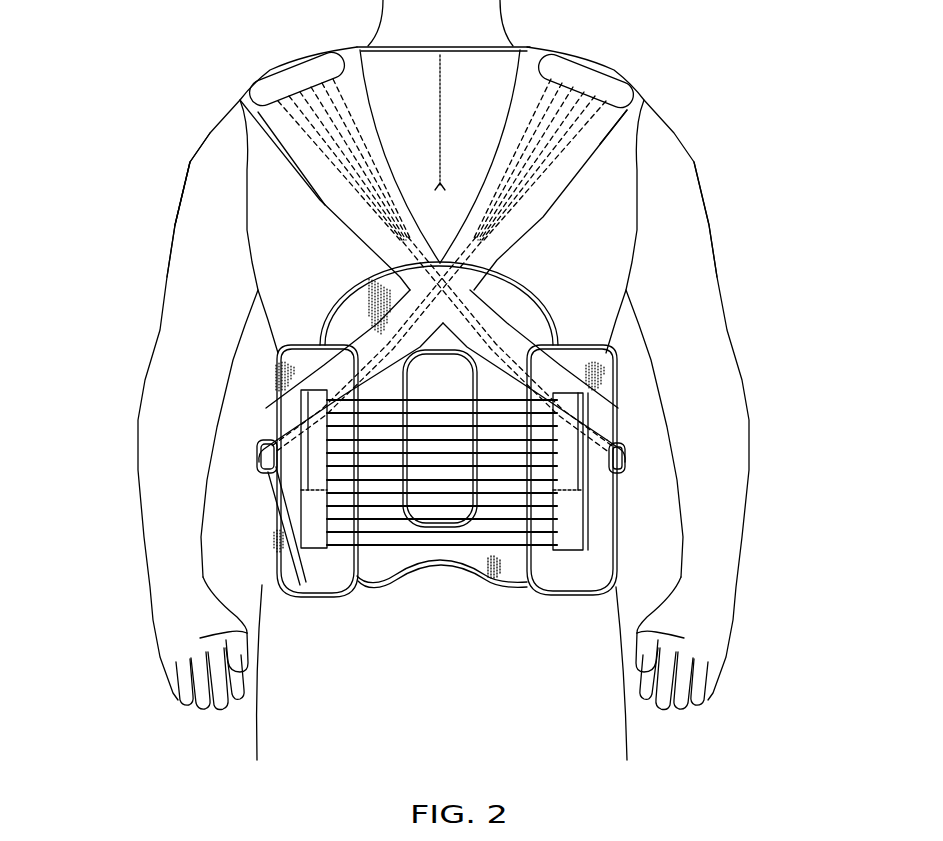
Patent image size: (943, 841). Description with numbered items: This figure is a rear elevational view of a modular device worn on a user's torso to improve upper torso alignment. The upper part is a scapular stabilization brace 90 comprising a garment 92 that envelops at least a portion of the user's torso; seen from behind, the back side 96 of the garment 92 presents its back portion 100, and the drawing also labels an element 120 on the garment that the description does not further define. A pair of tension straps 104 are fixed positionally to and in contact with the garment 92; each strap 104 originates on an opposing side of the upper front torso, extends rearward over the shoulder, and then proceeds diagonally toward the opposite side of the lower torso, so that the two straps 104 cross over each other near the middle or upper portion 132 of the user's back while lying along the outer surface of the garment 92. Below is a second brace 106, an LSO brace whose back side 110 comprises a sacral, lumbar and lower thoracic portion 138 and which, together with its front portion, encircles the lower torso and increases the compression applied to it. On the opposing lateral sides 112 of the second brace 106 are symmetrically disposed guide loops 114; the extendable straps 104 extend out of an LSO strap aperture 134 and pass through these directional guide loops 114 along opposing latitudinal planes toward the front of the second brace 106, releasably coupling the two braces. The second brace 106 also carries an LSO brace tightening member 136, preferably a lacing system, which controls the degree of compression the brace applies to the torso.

The scapular stabilization brace 90 is at (605, 53).
The garment 92 is at (650, 122).
The back side 96 is at (213, 113).
The back portion 100 is at (267, 182).
The tension straps 104 is at (343, 163).
The second brace 106 is at (400, 587).
The back side 110 is at (330, 563).
The opposing lateral sides 112 is at (273, 403).
The guide loops 114 is at (260, 460).
The sleeve / arm portion 120 is at (247, 200).
The upper portion 132 is at (613, 157).
The LSO strap aperture 134 is at (263, 433).
The LSO brace tightening member 136 is at (593, 495).
The sacral, lumbar and lower thoracic portion 138 is at (478, 553).